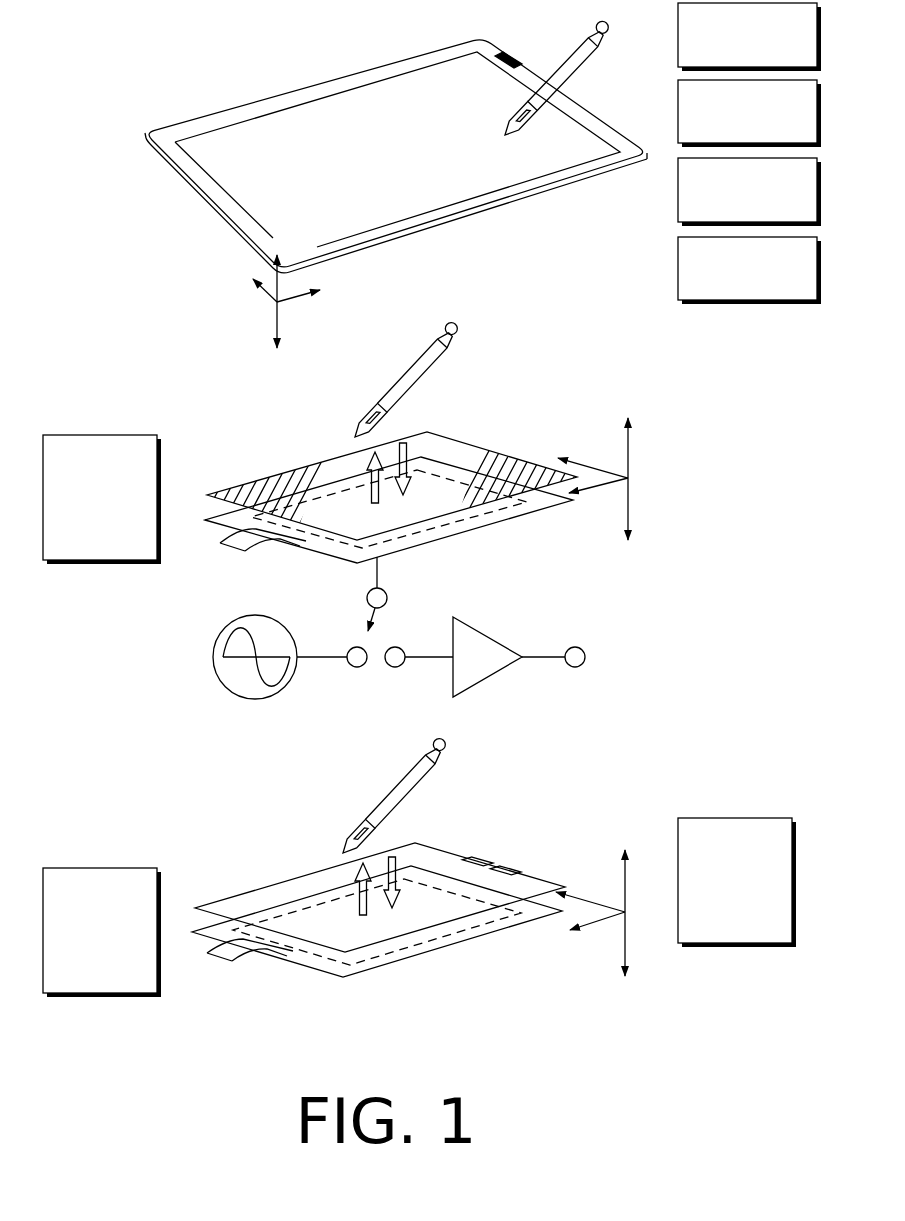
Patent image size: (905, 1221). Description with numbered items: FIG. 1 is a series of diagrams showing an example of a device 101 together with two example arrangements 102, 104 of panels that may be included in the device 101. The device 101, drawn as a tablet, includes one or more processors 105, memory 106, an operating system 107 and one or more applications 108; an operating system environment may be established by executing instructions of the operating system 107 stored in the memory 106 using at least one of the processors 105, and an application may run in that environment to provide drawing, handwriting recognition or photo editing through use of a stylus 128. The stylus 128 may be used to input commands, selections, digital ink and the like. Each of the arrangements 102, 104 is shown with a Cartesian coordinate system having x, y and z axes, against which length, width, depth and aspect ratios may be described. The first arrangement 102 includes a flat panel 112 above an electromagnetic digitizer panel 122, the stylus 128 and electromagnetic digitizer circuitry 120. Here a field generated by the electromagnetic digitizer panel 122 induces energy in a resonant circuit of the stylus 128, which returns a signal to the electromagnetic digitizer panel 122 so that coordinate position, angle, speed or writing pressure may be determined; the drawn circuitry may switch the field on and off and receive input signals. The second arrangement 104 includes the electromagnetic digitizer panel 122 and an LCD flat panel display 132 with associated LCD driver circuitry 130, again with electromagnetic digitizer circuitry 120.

The device 101 is at (178, 57).
The arrangement 102 is at (175, 393).
The arrangement 104 is at (166, 822).
The processors 105 is at (732, 58).
The memory 106 is at (732, 135).
The operating system 107 is at (732, 213).
The applications 108 is at (732, 292).
The flat panel 112 is at (292, 472).
The electromagnetic digitizer circuitry 120 is at (84, 543).
The electromagnetic digitizer panel 122 is at (330, 557).
The stylus 128 is at (583, 65).
The LCD driver circuitry 130 is at (719, 926).
The LCD flat panel display 132 is at (270, 885).